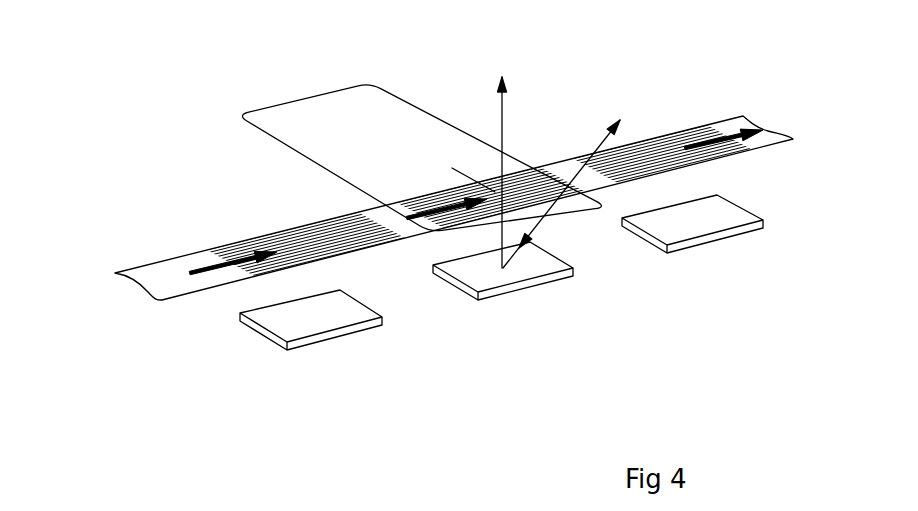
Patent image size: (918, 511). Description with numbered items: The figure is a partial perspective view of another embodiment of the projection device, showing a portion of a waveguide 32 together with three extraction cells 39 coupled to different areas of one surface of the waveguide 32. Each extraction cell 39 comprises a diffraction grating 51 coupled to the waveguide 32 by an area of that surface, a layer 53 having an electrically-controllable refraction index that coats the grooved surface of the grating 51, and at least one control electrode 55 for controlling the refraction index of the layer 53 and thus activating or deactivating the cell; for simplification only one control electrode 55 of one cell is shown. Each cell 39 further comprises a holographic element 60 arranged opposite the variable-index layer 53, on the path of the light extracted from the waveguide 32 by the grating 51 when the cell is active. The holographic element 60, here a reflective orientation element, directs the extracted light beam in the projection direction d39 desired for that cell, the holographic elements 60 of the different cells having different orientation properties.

The waveguide 32 is at (149, 272).
The extraction cell 39 is at (318, 356).
The diffraction grating 51 is at (537, 163).
The layer having an electrically-controllable refraction index 53 is at (553, 154).
The control electrode 55 is at (272, 121).
The holographic element 60 is at (495, 296).
The projection direction d39 is at (600, 142).